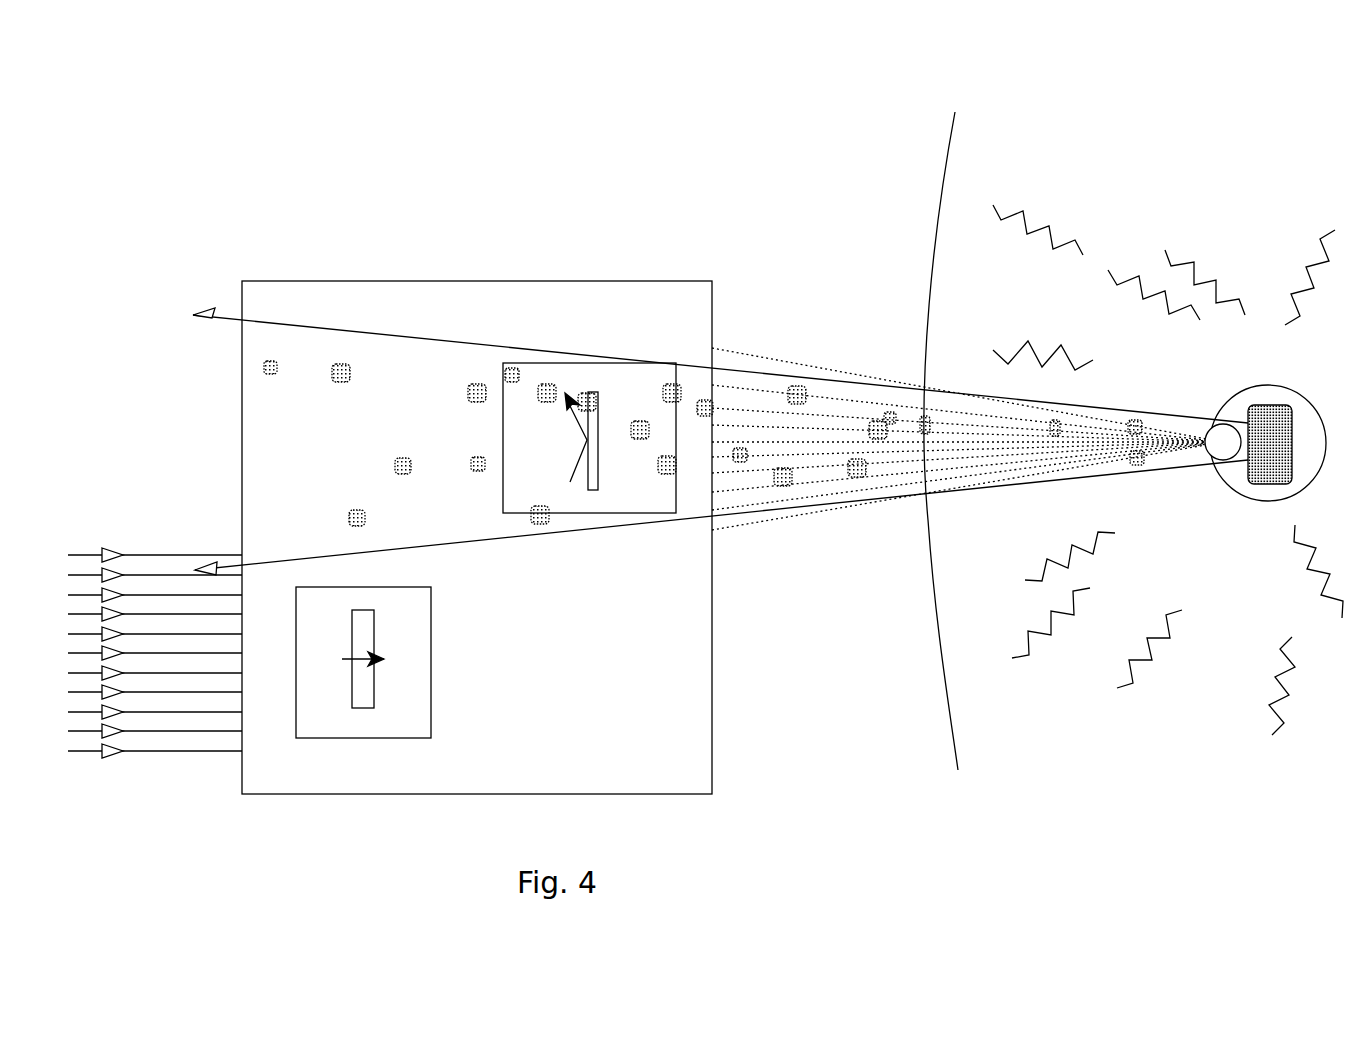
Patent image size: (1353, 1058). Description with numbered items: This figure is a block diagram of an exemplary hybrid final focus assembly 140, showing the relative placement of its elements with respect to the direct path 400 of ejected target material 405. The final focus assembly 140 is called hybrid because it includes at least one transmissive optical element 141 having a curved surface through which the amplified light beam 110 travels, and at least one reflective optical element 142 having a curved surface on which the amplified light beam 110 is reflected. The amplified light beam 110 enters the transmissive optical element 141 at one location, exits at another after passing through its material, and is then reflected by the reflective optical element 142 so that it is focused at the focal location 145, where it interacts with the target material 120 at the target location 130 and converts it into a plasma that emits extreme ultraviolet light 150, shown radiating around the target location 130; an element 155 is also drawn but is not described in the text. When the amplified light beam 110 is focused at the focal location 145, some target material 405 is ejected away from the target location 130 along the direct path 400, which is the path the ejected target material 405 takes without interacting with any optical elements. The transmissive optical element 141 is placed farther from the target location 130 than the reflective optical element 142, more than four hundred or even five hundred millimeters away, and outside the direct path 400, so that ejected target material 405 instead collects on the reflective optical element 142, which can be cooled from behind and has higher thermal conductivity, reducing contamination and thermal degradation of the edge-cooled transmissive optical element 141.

The amplified light beam 110 is at (163, 555).
The target material 120 is at (1255, 484).
The target location 130 is at (1275, 501).
The final focus assembly 140 is at (365, 281).
The transmissive optical element 141 is at (431, 700).
The reflective optical element 142 is at (540, 363).
The focal location 145 is at (1226, 424).
The extreme ultraviolet light 150 is at (1050, 212).
The boundary surface 155 is at (943, 167).
The direct path 400 is at (587, 532).
The ejected target material 405 is at (340, 372).